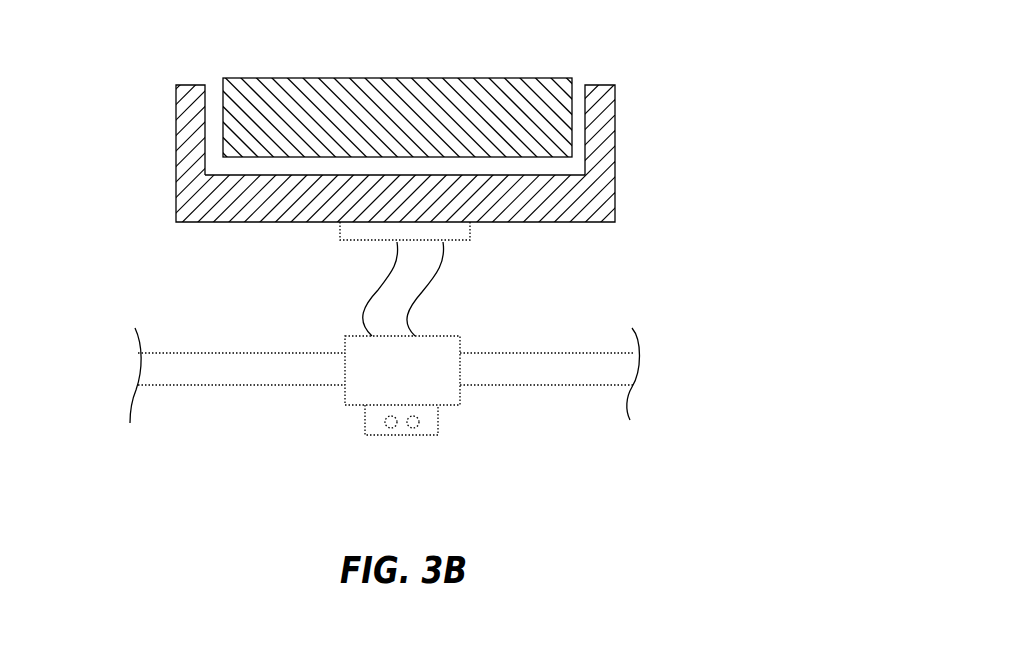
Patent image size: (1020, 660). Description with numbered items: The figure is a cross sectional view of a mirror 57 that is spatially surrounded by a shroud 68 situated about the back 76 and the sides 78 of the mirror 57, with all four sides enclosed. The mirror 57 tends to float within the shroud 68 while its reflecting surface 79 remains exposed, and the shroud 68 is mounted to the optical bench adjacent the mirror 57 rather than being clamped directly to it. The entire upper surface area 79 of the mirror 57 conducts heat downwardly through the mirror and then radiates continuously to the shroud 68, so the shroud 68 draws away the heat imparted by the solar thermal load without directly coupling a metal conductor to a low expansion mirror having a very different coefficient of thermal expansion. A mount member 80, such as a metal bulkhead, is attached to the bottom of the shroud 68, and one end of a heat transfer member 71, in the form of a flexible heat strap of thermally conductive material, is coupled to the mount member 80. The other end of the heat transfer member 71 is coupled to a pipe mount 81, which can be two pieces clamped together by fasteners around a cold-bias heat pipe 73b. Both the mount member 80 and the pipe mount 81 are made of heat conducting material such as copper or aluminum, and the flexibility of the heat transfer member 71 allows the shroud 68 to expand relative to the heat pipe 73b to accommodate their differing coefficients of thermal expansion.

The mirror 57 is at (260, 123).
The shroud 68 is at (218, 192).
The heat transfer member 71 is at (381, 300).
The heat pipe 73b is at (235, 368).
The back 76 is at (533, 157).
The sides 78 is at (228, 111).
The reflecting surface 79 is at (456, 78).
The mount member 80 is at (452, 232).
The pipe mount 81 is at (365, 383).